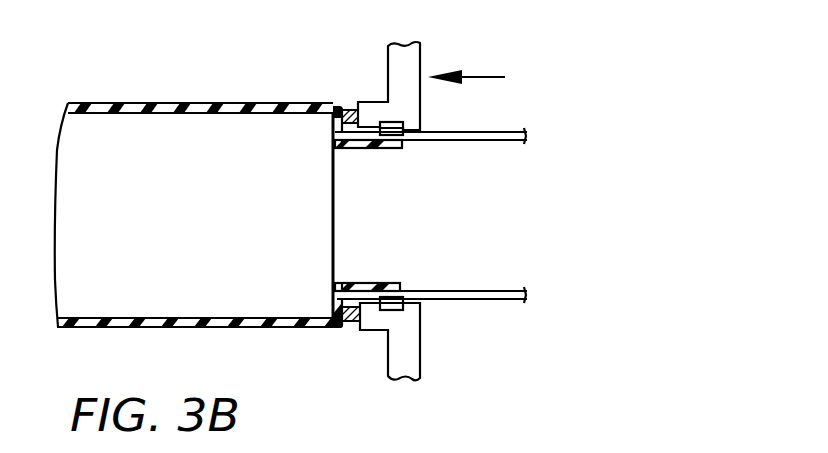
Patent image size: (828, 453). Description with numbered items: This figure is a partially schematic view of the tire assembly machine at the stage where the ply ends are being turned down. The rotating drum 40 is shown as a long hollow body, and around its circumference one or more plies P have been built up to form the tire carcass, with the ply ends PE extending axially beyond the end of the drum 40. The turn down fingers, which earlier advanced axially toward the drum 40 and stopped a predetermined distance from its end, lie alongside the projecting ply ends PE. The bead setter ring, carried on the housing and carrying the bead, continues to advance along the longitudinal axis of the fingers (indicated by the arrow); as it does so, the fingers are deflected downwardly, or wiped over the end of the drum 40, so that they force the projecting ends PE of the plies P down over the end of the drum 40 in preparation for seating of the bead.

The drum 40 is at (128, 135).
The plies P is at (210, 103).
The ply ends PE is at (353, 150).